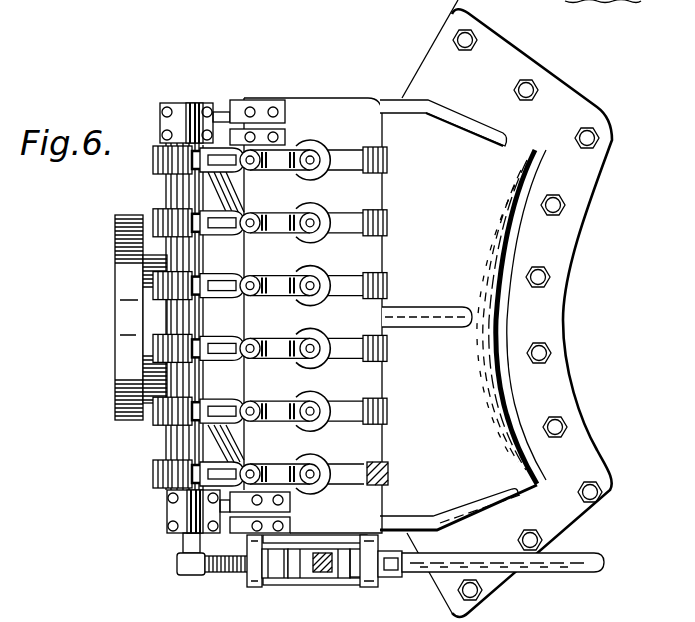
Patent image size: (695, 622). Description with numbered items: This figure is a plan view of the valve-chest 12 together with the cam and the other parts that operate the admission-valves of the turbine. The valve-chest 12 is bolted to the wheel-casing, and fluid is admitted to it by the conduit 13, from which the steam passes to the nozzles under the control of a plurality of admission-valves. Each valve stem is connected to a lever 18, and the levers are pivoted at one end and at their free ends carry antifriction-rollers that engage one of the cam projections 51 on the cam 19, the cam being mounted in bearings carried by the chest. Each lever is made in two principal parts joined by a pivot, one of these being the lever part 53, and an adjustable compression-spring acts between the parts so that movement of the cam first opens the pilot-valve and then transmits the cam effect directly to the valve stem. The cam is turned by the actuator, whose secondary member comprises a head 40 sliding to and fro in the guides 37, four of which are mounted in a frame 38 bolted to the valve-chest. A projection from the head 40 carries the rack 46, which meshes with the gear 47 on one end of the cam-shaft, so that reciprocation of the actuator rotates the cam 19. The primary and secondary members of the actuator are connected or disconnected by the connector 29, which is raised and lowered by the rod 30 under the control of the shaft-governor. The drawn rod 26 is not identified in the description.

The valve-chest 12 is at (374, 315).
The conduit 13 is at (118, 315).
The lever 18 is at (279, 164).
The cam 19 is at (174, 142).
The rod 26 is at (567, 573).
The connector 29 is at (338, 573).
The rod 30 is at (320, 573).
The guides 37 is at (333, 546).
The frame 38 is at (380, 584).
The head 40 is at (283, 573).
The rack 46 is at (238, 573).
The gear 47 is at (212, 577).
The cam projections 51 is at (155, 215).
The lever part 53 is at (273, 302).